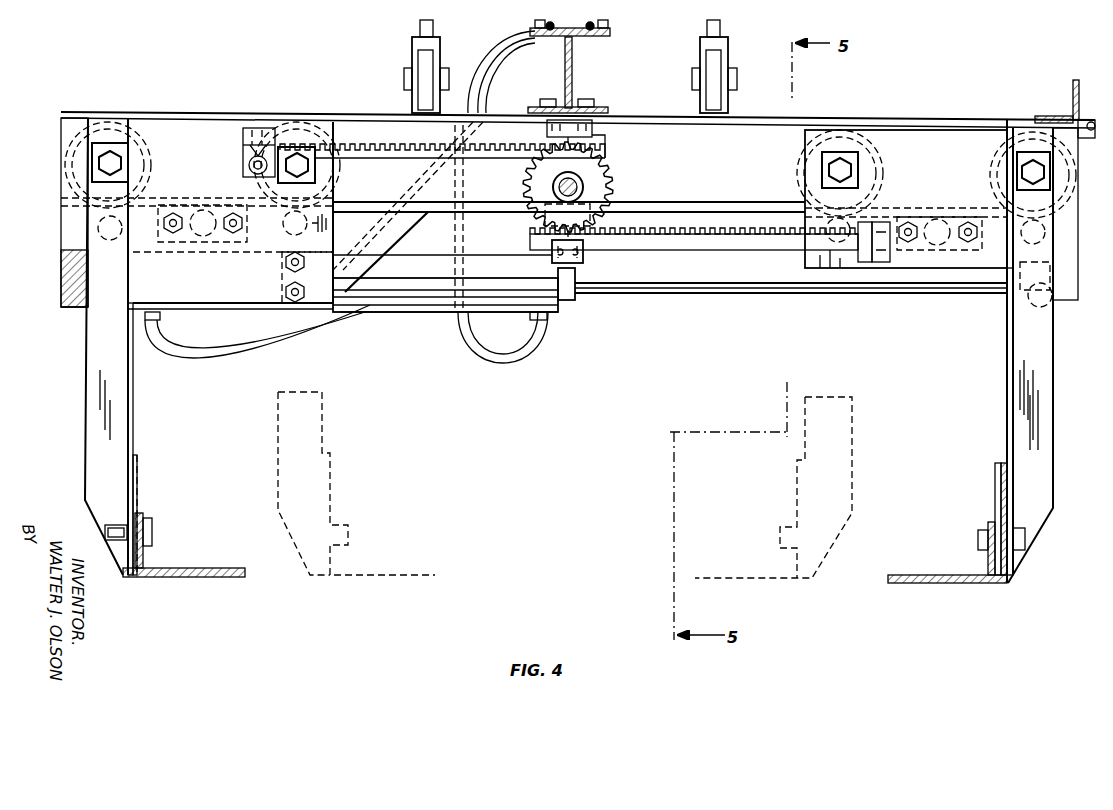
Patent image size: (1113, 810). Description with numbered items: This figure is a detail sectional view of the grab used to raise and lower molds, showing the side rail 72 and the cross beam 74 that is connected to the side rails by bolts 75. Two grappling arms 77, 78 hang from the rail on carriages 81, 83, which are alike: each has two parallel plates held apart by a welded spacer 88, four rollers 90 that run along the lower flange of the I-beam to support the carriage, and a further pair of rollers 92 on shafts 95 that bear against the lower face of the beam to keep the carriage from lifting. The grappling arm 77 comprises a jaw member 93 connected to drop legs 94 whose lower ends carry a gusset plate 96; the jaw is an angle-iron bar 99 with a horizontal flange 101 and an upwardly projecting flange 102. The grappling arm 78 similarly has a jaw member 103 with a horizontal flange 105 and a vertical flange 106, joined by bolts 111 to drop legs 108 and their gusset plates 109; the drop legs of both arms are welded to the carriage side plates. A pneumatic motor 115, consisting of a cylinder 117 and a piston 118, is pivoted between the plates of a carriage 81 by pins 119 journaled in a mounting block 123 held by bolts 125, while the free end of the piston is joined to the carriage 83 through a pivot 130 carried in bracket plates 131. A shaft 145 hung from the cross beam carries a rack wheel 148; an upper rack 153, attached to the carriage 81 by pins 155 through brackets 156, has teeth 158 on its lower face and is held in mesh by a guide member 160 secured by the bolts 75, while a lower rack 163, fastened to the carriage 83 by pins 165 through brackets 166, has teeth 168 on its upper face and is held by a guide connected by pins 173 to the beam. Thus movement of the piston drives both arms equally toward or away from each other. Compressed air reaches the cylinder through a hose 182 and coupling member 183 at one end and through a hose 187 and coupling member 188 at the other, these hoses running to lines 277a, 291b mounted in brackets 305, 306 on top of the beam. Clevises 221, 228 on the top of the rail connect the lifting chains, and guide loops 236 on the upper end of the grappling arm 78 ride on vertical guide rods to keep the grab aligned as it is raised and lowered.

The side rail 72 is at (952, 150).
The cross beam 74 is at (331, 114).
The bolts 75 is at (545, 100).
The grappling arm 77 is at (100, 411).
The grappling arm 78 is at (1054, 428).
The carriage 81 is at (58, 148).
The carriage 83 is at (1080, 176).
The spacer 88 is at (330, 226).
The rollers 90 is at (630, 169).
The rollers 92 is at (208, 240).
The jaw member 93 is at (196, 566).
The drop legs 94 is at (135, 426).
The shafts 95 is at (200, 240).
The gusset plate 96 is at (140, 501).
The bar 99 is at (160, 560).
The horizontal flange 101 is at (222, 580).
The upwardly projecting flange 102 is at (138, 484).
The jaw member 103 is at (992, 585).
The horizontal flange 105 is at (943, 575).
The vertical flange 106 is at (1000, 504).
The drop legs 108 is at (1025, 397).
The gusset plates 109 is at (995, 480).
The bolts 111 is at (977, 540).
The hydraulic motor 115 is at (415, 314).
The cylinder 117 is at (405, 302).
The piston 118 is at (762, 295).
The pins 119 is at (408, 207).
The mounting block 123 is at (197, 228).
The bolts 125 is at (284, 265).
The pivot 130 is at (1050, 310).
The bracket plates 131 is at (1060, 278).
The shaft 145 is at (554, 186).
The rack wheel 148 is at (604, 186).
The rack 153 is at (607, 150).
The pins 155 is at (258, 127).
The brackets 156 is at (243, 148).
The teeth 158 is at (398, 140).
The guide member 160 is at (594, 128).
The rack 163 is at (712, 245).
The pins 165 is at (866, 265).
The brackets 166 is at (882, 265).
The teeth 168 is at (710, 228).
The pins 173 is at (585, 258).
The hose 182 is at (242, 358).
The coupling member 183 is at (165, 316).
The hose 187 is at (510, 364).
The coupling member 188 is at (548, 320).
The clevis 221 is at (720, 42).
The clevis 228 is at (420, 42).
The guide loops 236 is at (1080, 100).
The line 277a is at (592, 36).
The line 291b is at (550, 36).
The brackets 305 is at (600, 22).
The brackets 306 is at (540, 20).